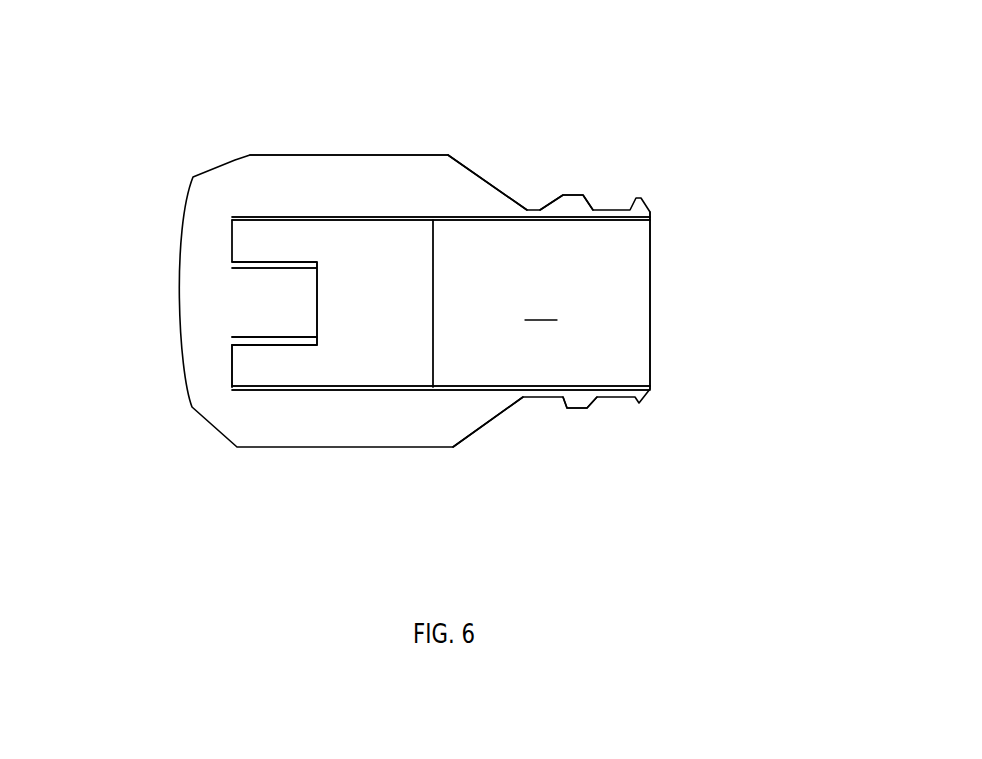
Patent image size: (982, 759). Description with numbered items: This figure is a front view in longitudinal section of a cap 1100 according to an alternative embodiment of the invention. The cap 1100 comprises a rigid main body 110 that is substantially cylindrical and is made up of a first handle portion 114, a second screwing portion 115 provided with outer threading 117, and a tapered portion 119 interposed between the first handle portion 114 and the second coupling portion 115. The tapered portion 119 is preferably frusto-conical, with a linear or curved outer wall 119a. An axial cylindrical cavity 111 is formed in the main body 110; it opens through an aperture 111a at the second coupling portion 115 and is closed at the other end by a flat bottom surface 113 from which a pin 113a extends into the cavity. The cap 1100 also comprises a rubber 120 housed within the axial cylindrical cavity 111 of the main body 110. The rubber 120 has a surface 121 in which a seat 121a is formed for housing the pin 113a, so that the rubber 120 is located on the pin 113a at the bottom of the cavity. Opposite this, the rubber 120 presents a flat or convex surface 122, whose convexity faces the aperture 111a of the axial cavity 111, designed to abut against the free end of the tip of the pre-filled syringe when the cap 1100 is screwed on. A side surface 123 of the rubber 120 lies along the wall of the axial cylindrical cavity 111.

The cap 1100 is at (532, 115).
The rigid main body 110 is at (400, 140).
The first handle portion 114 is at (273, 148).
The outer wall 119a is at (490, 187).
The outer threading 117 is at (583, 202).
The aperture 111a is at (650, 283).
The second screwing portion 115 is at (543, 402).
The tapered portion 119 is at (469, 399).
The axial cylindrical cavity 111 is at (441, 303).
The side surface 123 is at (282, 217).
The flat bottom surface 113 is at (232, 245).
The pin 113a is at (262, 303).
The surface 121 is at (248, 360).
The seat 121a is at (268, 342).
The rubber 120 is at (352, 393).
The flat or convex surface 122 is at (434, 315).